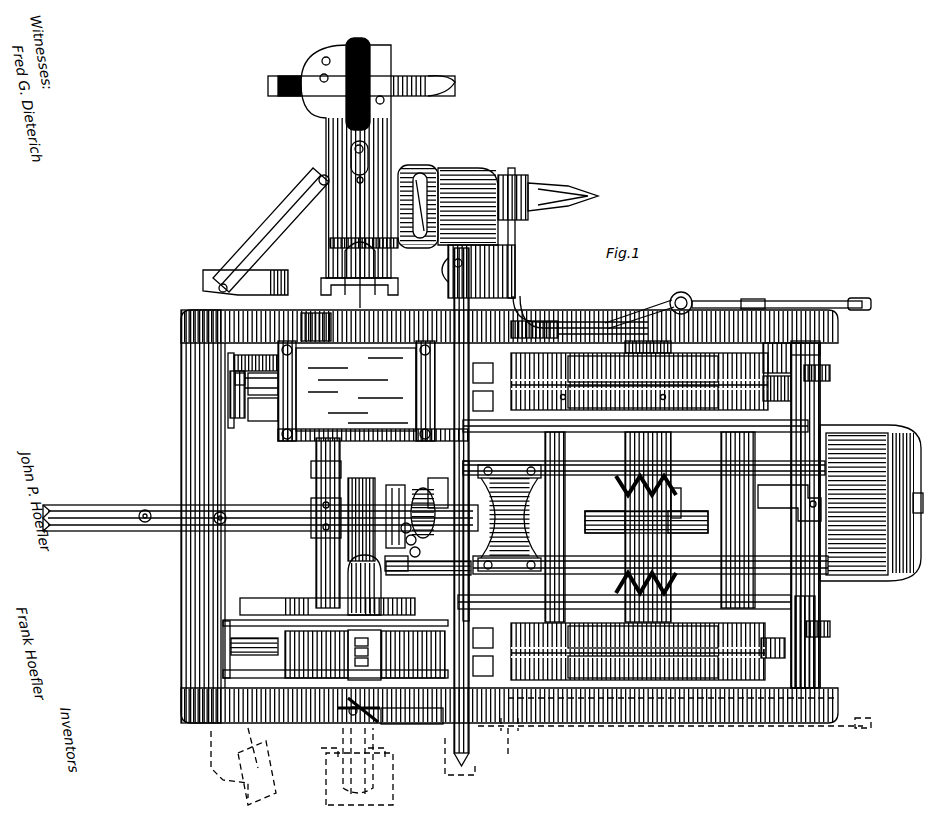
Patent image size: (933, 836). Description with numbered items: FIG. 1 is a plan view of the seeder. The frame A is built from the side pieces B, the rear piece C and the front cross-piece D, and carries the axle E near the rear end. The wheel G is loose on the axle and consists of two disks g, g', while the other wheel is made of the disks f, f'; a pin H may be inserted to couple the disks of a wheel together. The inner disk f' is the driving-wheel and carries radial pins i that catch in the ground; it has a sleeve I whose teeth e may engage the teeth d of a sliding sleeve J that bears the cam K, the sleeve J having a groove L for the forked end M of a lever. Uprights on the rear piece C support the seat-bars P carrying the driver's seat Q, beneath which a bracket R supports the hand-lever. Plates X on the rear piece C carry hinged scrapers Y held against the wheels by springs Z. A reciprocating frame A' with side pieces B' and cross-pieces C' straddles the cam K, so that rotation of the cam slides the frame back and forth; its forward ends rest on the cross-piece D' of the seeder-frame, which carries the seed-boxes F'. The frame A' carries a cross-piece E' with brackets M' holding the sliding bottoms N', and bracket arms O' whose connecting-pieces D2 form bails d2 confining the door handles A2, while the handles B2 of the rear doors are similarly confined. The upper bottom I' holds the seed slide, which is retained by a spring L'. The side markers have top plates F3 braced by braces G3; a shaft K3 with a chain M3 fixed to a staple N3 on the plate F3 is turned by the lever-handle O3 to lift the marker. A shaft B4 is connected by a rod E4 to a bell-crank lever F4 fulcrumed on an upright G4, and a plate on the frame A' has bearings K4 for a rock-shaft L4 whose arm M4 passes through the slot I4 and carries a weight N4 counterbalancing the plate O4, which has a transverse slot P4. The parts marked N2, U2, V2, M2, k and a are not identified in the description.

The side pieces B is at (509, 516).
The front cross-piece D is at (199, 516).
The arm M4 is at (504, 507).
The axle E is at (639, 381).
The disk of wheel f is at (643, 369).
The inner disk f' is at (643, 397).
The radial pins i is at (617, 398).
The pivoted rod E4 is at (604, 347).
The bell-crank lever F4 is at (554, 338).
The wheel G is at (638, 651).
The disk of wheel g is at (643, 637).
The disk of wheel g' is at (643, 667).
The seed-boxes F' is at (356, 391).
The sliding bottoms N' is at (373, 403).
The block N2 is at (346, 339).
The connecting-pieces D2 is at (215, 393).
The bails d2 is at (241, 519).
The handle A2 is at (352, 519).
The bracket arms O' is at (335, 539).
The cross-piece of seeder-frame D' is at (334, 650).
The key k is at (376, 645).
The upper bottom I' is at (348, 526).
The spring L' is at (314, 519).
The cross-piece E' is at (435, 473).
The brackets M' is at (428, 574).
The yoke U2 is at (509, 518).
The post V2 is at (517, 527).
The sleeve I is at (648, 527).
The teeth e is at (648, 534).
The eccentric or cam K is at (646, 530).
The forked end M is at (694, 527).
The teeth d is at (605, 512).
The sleeve J is at (679, 503).
The cross-pieces C' is at (749, 520).
The rear frame-piece C is at (801, 448).
The frame A is at (260, 540).
The side pieces of reciprocating frame B' is at (635, 419).
The reciprocating frame A' is at (533, 528).
The seat-bars P is at (644, 459).
The circumferential groove L is at (650, 572).
The bracket R is at (624, 588).
The driver's seat Q is at (871, 503).
The shaft B4 is at (813, 408).
The plates X is at (812, 343).
The springs Z is at (827, 504).
The hinged scraper Y is at (776, 507).
The lever-handle O3 is at (791, 301).
The weight N4 is at (689, 295).
The upright G4 is at (639, 308).
The shaft K3 is at (580, 310).
The top plate of side marker F3 is at (349, 171).
The staple N3 is at (369, 158).
The chain M3 is at (348, 241).
The brace G3 is at (334, 184).
The pin H is at (242, 282).
The transverse slot P4 is at (422, 201).
The plate O4 is at (468, 206).
The bearings K4 is at (548, 231).
The rock-shaft L4 is at (495, 271).
The vertical slot I4 is at (449, 274).
The plate M2 is at (390, 711).
The handle B2 is at (483, 519).
The dotted outline a is at (541, 751).